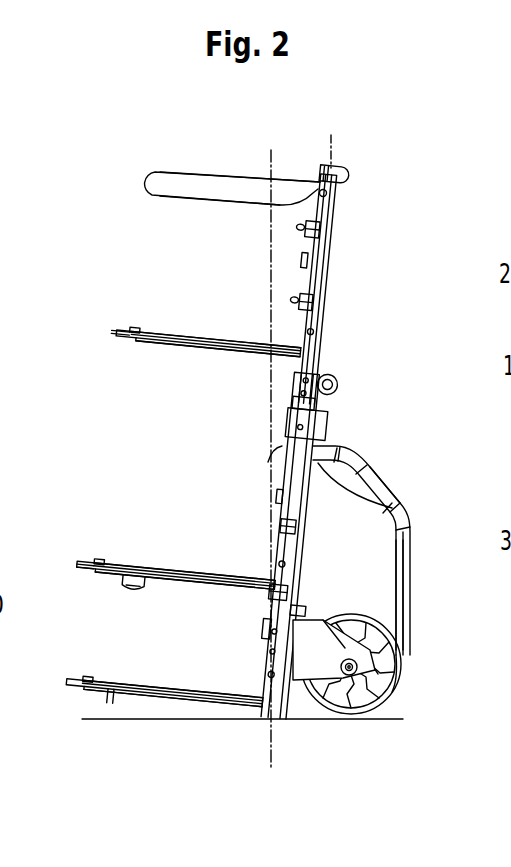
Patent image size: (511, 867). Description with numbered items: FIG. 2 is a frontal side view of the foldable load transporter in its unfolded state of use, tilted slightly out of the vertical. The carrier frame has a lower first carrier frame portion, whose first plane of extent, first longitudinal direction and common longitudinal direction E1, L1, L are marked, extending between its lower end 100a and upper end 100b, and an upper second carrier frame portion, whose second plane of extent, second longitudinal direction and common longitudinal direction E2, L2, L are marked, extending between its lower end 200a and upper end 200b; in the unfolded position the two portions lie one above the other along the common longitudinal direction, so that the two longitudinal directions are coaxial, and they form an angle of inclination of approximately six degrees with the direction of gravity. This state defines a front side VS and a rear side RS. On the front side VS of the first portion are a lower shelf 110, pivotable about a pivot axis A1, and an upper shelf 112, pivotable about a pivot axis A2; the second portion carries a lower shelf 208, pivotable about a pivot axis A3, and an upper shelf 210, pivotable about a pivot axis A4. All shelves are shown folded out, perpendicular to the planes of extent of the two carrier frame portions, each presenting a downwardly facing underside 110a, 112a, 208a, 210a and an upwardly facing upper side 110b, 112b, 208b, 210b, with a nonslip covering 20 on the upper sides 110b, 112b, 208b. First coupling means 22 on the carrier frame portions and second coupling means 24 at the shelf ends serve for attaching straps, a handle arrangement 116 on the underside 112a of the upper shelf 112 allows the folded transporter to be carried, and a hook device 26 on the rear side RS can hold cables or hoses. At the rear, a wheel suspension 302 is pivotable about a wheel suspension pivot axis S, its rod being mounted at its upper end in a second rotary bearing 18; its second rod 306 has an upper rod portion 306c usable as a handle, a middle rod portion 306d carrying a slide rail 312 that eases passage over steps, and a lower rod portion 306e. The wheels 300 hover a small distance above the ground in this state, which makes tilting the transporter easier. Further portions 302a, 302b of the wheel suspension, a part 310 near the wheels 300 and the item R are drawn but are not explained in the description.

The second rotary bearing 18 is at (325, 419).
The nonslip covering 20 is at (135, 330).
The first coupling means 22 is at (318, 233).
The second coupling means 24 is at (118, 341).
The hook device 26 is at (325, 259).
The lower end of first carrier frame portion 100a is at (258, 723).
The upper end of first carrier frame portion 100b is at (287, 394).
The lower shelf 110 is at (90, 672).
The underside of lower shelf 110a is at (165, 706).
The upper side of lower shelf 110b is at (140, 685).
The upper shelf 112 is at (102, 550).
The underside of upper shelf 112a is at (175, 584).
The upper side of upper shelf 112b is at (185, 570).
The handle arrangement 116 is at (135, 584).
The lower end of second carrier frame portion 200a is at (322, 367).
The upper end of second carrier frame portion 200b is at (352, 170).
The lower shelf of second carrier frame portion 208 is at (122, 330).
The underside of lower shelf of second carrier frame portion 208a is at (228, 346).
The upper side of lower shelf of second carrier frame portion 208b is at (190, 335).
The upper shelf of second carrier frame portion 210 is at (145, 168).
The underside of upper shelf of second carrier frame portion 210a is at (245, 207).
The upper side of upper shelf of second carrier frame portion 210b is at (222, 178).
The wheels 300 is at (370, 691).
The wheel suspension 302 is at (405, 480).
The lower end of wheel bracket 302a is at (372, 662).
The upper section of wheel bracket 302b is at (390, 480).
The second rod 306 is at (394, 606).
The upper rod portion 306c is at (362, 470).
The middle rod portion 306d is at (395, 565).
The lower rod portion 306e is at (395, 692).
The hub plate 310 is at (322, 624).
The slide rail 312 is at (403, 574).
The pivot axis A1 is at (275, 675).
The pivot axis A2 is at (285, 565).
The pivot axis A3 is at (312, 336).
The pivot axis A4 is at (330, 194).
The wheel R is at (385, 656).
The rear side RS is at (395, 355).
The wheel suspension pivot axis S is at (288, 705).
The front side VS is at (128, 250).
The first plane of extent, first longitudinal direction and common longitudinal dire E1, L1, L is at (270, 742).
The second plane of extent, second longitudinal direction and common longitudinal di E2, L2, L is at (318, 283).